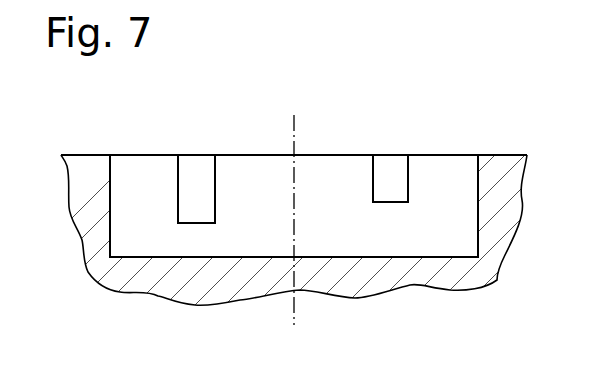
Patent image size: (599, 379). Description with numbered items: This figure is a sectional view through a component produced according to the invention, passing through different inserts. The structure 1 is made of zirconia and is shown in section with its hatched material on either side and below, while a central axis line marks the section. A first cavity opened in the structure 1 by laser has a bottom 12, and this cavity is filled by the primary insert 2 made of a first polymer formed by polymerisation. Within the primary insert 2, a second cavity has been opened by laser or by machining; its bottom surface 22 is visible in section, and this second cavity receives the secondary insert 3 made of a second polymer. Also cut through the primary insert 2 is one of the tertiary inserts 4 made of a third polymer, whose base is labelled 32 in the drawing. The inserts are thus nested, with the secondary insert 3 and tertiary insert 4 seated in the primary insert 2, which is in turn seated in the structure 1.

The structure 1 is at (497, 175).
The primary insert 2 is at (254, 185).
The bottom 12 is at (450, 255).
The secondary insert 3 is at (384, 164).
The bottom surface 22 is at (393, 200).
The tertiary insert 4 is at (192, 168).
The bottom of recess 32 is at (198, 220).